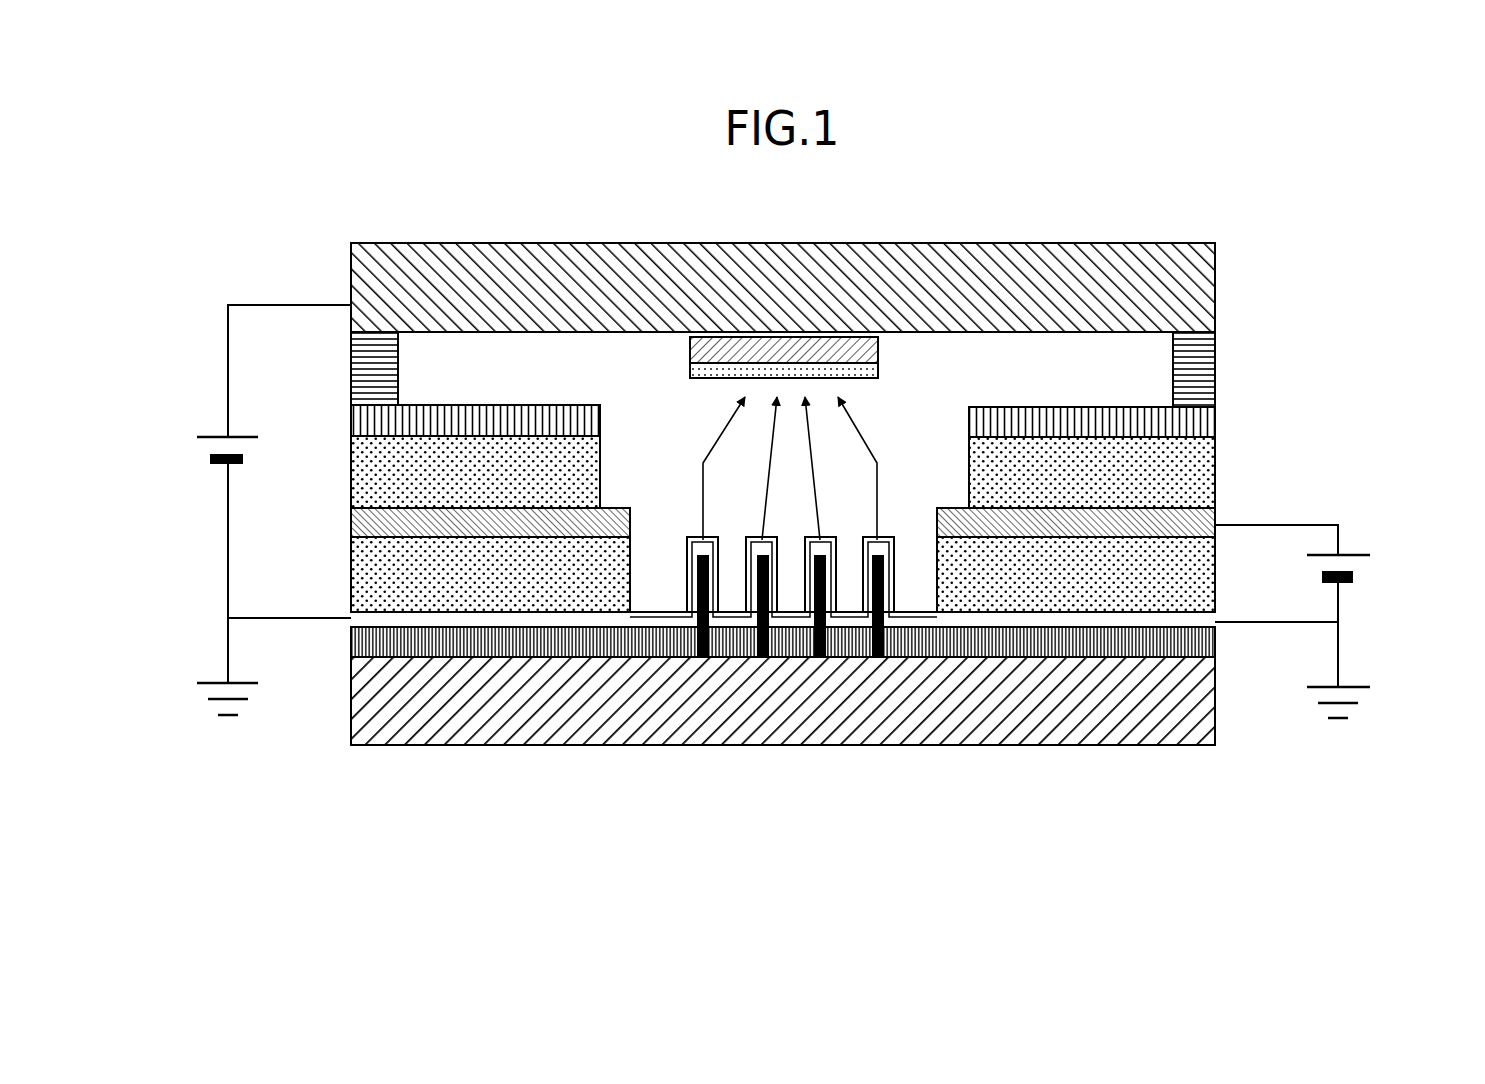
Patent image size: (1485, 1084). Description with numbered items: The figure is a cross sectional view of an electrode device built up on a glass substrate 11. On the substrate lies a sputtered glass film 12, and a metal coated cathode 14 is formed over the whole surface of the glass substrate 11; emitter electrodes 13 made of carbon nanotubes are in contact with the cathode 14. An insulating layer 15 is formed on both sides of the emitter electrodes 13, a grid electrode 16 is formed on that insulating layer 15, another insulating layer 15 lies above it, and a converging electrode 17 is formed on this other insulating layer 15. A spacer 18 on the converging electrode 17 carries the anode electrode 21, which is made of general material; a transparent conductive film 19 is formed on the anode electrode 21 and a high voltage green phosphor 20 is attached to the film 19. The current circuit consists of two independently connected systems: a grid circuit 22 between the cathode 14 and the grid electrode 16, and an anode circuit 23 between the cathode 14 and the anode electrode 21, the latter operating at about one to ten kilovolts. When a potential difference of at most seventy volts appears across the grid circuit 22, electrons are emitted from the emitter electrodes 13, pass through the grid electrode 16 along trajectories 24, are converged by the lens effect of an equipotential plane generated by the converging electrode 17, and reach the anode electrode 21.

The glass substrate 11 is at (597, 747).
The sputtered glass film 12 is at (1215, 642).
The emitter electrodes 13 is at (878, 657).
The metal coated cathode 14 is at (1010, 627).
The insulating layer 15 is at (351, 560).
The grid electrode 16 is at (473, 537).
The converging electrode 17 is at (351, 422).
The spacer 18 is at (351, 370).
The transparent conductive film 19 is at (690, 345).
The high voltage green phosphor 20 is at (878, 375).
The anode electrode 21 is at (1215, 292).
The grid circuit 22 is at (1338, 658).
The anode circuit 23 is at (277, 303).
The trajectories 24 is at (877, 515).